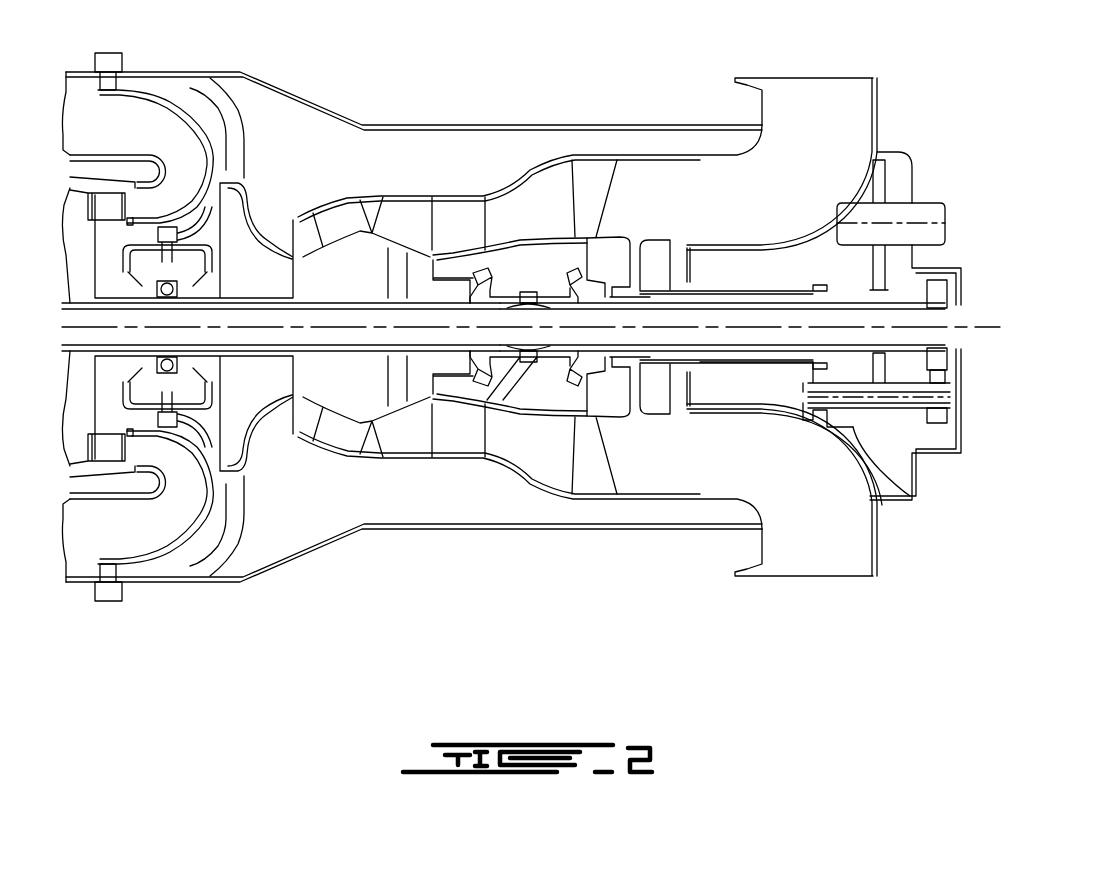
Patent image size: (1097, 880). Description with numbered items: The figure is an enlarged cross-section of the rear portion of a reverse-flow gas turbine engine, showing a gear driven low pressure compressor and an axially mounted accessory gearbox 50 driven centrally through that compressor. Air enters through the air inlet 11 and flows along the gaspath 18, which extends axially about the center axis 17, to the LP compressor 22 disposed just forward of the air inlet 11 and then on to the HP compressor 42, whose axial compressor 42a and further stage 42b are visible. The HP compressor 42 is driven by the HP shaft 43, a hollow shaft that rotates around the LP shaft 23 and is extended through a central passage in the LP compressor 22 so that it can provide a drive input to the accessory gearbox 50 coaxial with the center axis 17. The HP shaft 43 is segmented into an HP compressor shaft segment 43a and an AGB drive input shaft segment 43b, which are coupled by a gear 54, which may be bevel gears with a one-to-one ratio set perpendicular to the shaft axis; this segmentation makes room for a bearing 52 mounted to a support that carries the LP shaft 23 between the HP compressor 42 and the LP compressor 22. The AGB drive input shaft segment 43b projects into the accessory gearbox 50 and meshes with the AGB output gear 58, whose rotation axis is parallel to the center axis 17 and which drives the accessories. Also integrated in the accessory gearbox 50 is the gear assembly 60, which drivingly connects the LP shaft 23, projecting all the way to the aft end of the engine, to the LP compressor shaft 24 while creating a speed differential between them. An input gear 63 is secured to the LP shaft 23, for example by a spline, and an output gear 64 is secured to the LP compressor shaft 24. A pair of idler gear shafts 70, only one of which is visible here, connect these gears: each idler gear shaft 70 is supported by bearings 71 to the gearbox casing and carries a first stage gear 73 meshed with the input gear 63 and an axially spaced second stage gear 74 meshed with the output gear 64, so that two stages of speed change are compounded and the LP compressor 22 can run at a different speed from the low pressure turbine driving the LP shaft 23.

The air inlet 11 is at (843, 93).
The center axis 17 is at (967, 325).
The gaspath 18 is at (593, 467).
The LP compressor 22 is at (640, 473).
The LP shaft 23 is at (917, 287).
The LP compressor shaft 24 is at (717, 290).
The HP compressor 42 is at (408, 213).
The axial compressor 42a is at (257, 430).
The second stage rotor 42b is at (403, 443).
The HP shaft 43 is at (503, 416).
The HP compressor shaft segment 43a is at (343, 353).
The AGB drive input shaft segment 43b is at (733, 360).
The accessory gearbox 50 is at (950, 216).
The bearing 52 is at (533, 350).
The gear 54 is at (552, 273).
The AGB output gear 58 is at (888, 213).
The gear assembly 60 is at (966, 440).
The input gear 63 is at (935, 358).
The output gear 64 is at (772, 362).
The idler gear shaft 70 is at (873, 453).
The bearing 71 is at (952, 385).
The first stage gear 73 is at (937, 417).
The second stage gear 74 is at (817, 437).